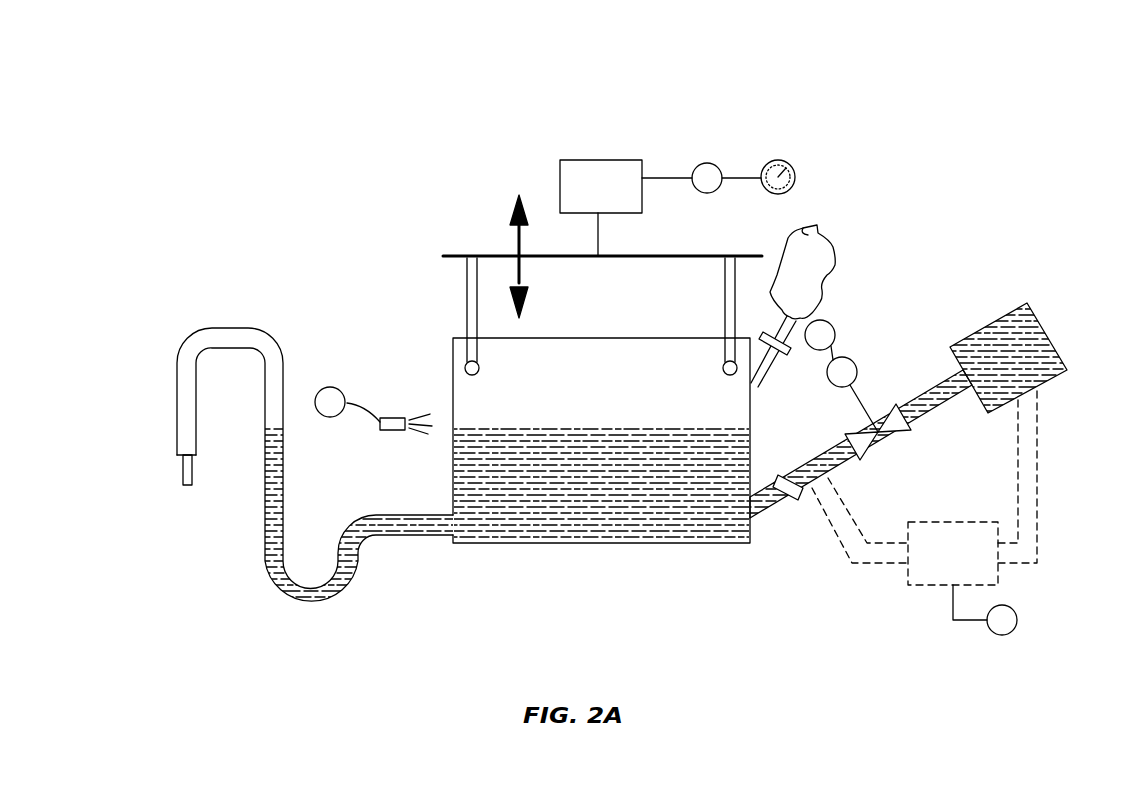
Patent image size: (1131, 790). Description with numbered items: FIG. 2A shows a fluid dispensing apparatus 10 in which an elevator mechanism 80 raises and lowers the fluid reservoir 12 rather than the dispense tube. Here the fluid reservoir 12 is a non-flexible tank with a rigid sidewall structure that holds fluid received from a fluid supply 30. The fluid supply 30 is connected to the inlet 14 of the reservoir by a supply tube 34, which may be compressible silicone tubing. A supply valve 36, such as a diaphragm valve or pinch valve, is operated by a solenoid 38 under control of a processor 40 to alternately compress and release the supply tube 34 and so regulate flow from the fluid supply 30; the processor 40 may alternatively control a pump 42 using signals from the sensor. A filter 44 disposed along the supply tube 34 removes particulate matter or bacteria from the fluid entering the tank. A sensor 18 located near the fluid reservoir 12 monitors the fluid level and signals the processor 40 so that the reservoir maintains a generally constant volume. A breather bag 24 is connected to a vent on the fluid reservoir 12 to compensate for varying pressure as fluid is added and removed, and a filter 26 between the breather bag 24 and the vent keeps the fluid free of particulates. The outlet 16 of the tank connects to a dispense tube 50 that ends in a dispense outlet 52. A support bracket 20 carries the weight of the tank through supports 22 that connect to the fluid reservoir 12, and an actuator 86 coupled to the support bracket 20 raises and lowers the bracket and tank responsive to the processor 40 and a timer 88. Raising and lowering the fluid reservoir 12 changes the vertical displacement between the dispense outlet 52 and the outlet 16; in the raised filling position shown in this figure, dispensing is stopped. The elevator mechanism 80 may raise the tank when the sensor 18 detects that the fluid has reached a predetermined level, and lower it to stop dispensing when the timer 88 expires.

The fluid dispensing apparatus 10 is at (717, 68).
The fluid reservoir 12 is at (572, 543).
The inlet 14 is at (753, 512).
The outlet 16 is at (450, 523).
The sensor 18 is at (395, 415).
The support bracket 20 is at (458, 255).
The supports 22 is at (468, 300).
The breather bag 24 is at (810, 230).
The filter 26 is at (790, 357).
The fluid supply 30 is at (1035, 315).
The supply tube 34 is at (933, 413).
The supply valve 36 is at (890, 407).
The solenoid 38 is at (853, 355).
The processor 40 is at (708, 193).
The pump 42 is at (940, 522).
The filter 44 is at (805, 503).
The dispense tube 50 is at (283, 500).
The dispense outlet 52 is at (182, 463).
The elevator mechanism 80 is at (468, 178).
The actuator 86 is at (625, 160).
The timer 88 is at (778, 160).